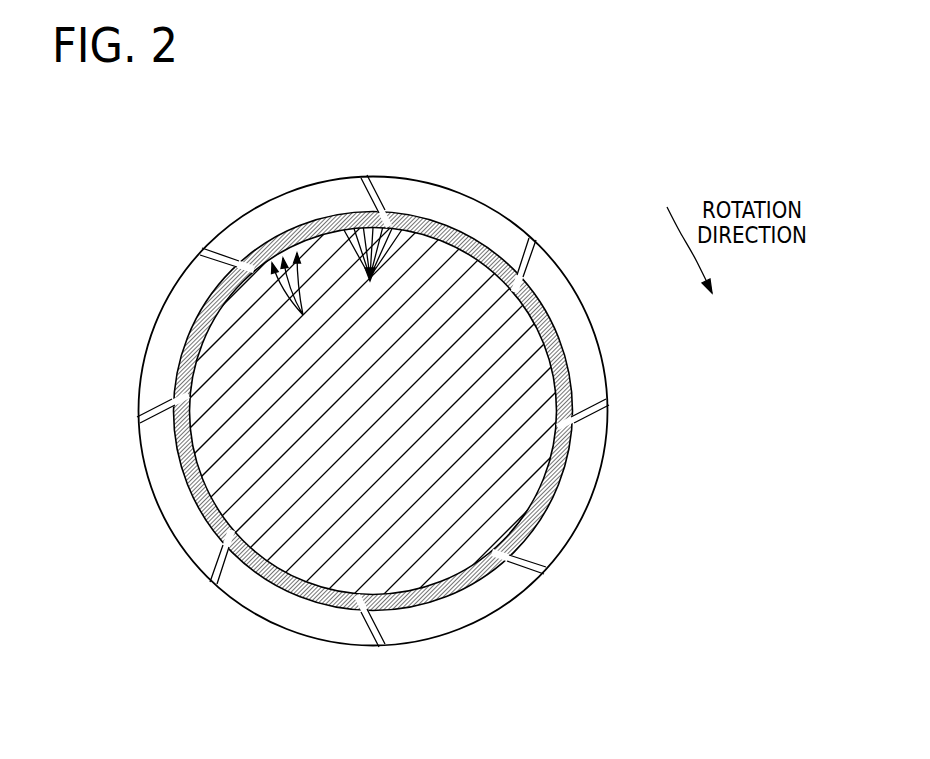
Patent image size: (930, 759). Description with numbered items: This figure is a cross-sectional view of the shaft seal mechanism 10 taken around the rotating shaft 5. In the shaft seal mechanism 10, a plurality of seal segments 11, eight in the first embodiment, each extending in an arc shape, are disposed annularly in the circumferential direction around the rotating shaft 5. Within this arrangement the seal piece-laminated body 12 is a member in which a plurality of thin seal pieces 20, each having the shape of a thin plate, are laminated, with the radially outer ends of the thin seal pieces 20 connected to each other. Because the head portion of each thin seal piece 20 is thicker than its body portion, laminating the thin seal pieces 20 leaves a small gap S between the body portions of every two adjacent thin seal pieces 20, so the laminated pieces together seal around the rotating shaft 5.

The rotating shaft 5 is at (535, 302).
The shaft seal mechanism 10 is at (637, 192).
The seal segment 11 is at (270, 198).
The seal piece-laminated body 12 is at (327, 213).
The thin seal piece 20 is at (373, 274).
The small gap S is at (295, 299).